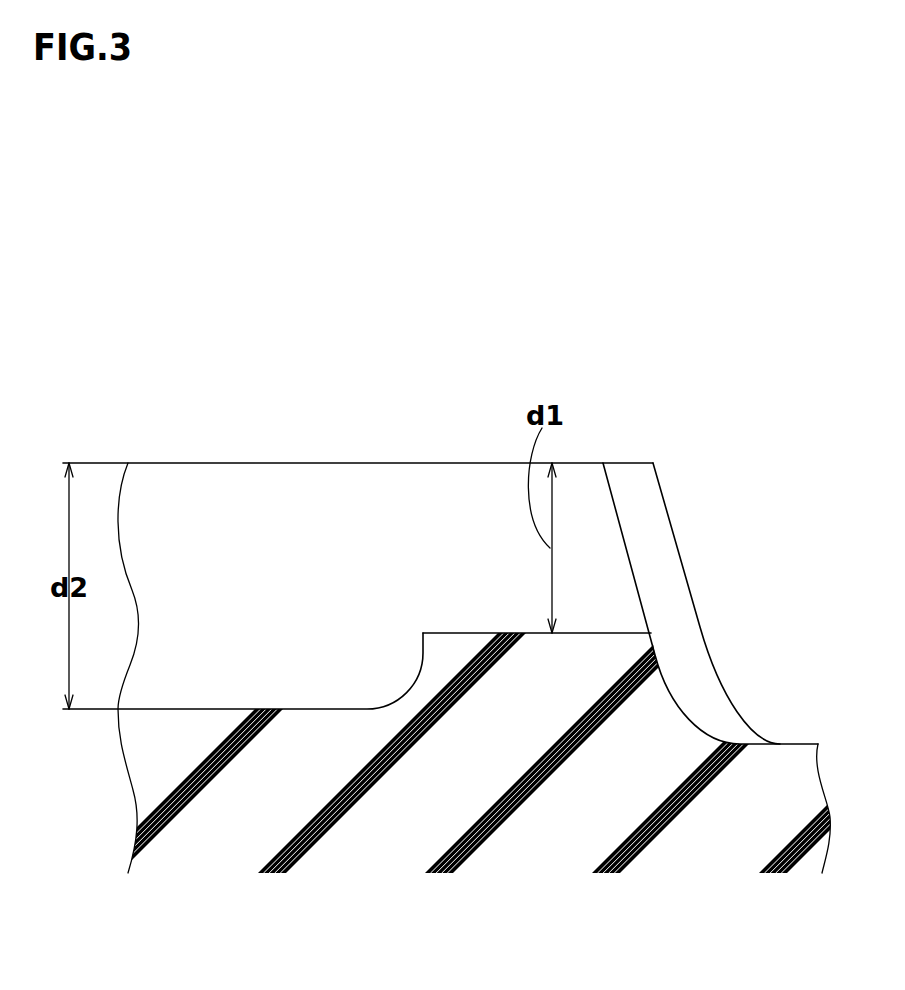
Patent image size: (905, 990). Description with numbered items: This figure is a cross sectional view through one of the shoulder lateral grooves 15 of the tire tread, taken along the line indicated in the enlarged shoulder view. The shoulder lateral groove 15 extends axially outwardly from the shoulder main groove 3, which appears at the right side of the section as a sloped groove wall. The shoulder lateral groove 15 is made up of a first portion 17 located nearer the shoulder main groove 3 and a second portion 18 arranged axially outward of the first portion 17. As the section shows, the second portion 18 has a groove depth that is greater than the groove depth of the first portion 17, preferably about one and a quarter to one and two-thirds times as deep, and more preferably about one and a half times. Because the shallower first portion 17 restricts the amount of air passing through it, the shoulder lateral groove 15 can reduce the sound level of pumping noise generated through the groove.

The shoulder lateral groove 15 is at (358, 592).
The first portion 17 is at (458, 585).
The second portion 18 is at (307, 600).
The shoulder main groove 3 is at (762, 700).